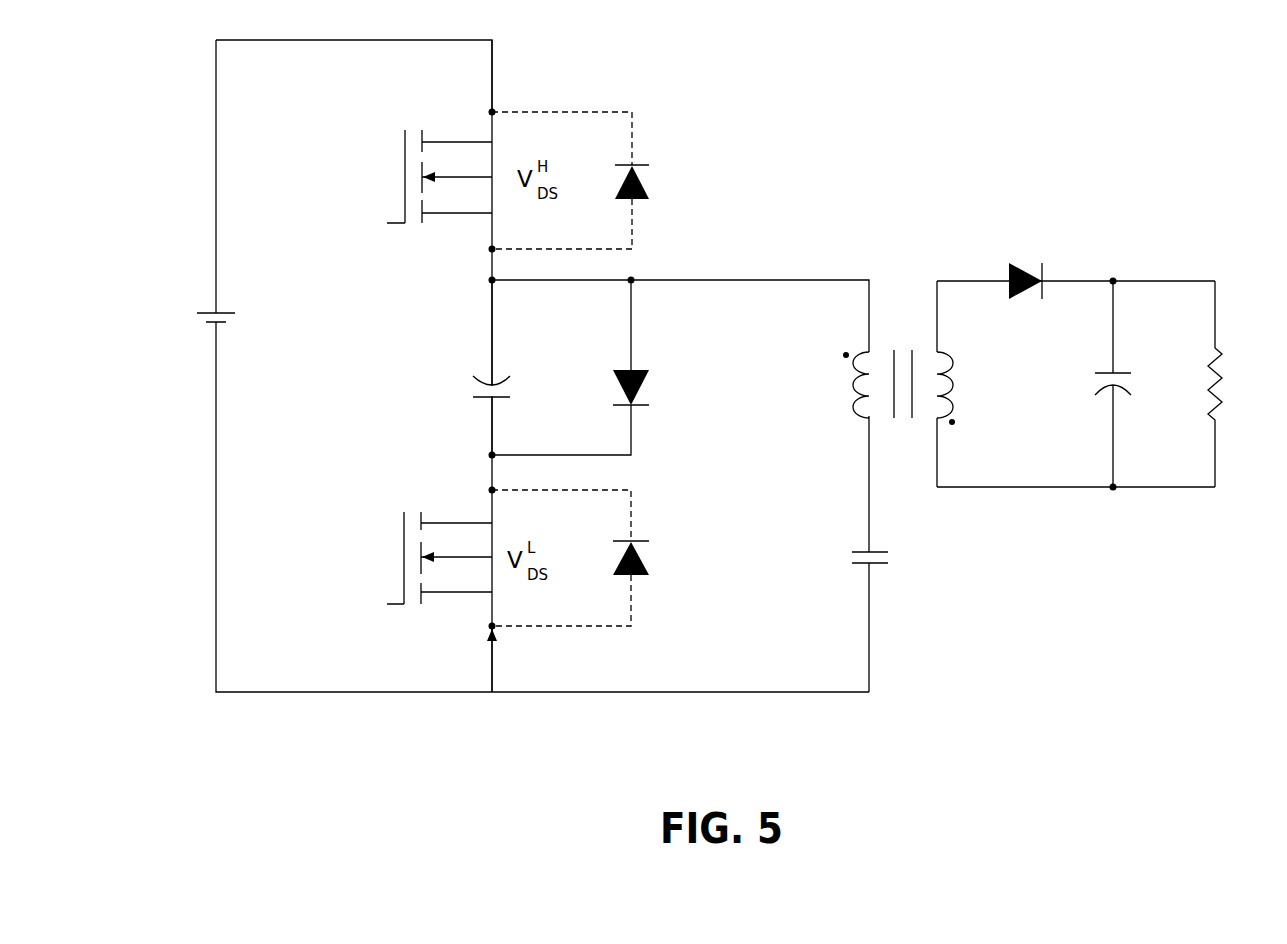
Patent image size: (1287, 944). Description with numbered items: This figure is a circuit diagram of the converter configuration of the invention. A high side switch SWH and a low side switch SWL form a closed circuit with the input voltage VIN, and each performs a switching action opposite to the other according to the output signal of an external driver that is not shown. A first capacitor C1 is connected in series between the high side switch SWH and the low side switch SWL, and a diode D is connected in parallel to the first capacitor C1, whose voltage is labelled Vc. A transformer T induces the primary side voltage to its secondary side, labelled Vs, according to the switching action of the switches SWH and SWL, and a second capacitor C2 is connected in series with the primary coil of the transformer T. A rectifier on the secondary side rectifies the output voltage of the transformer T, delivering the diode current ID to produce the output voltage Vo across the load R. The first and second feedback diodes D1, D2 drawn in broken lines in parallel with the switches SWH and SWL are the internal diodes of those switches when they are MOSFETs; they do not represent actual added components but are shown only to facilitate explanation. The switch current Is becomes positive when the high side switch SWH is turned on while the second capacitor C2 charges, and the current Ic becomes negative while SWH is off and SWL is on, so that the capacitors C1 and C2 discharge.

The high side switch SWH is at (408, 188).
The low side switch SWL is at (410, 570).
The first feedback diode D1 is at (595, 180).
The second feedback diode D2 is at (595, 558).
The diode D is at (588, 367).
The first capacitor C1 is at (472, 387).
The second capacitor C2 is at (892, 559).
The transformer T is at (903, 384).
The load resistor R is at (1233, 384).
The input voltage VIN is at (197, 319).
The output voltage Vo is at (1181, 269).
The secondary voltage Vs is at (967, 385).
The clamp capacitor voltage Vc is at (522, 367).
The switch current Is is at (509, 76).
The capacitor current Ic is at (508, 659).
The diode current ID is at (1076, 276).